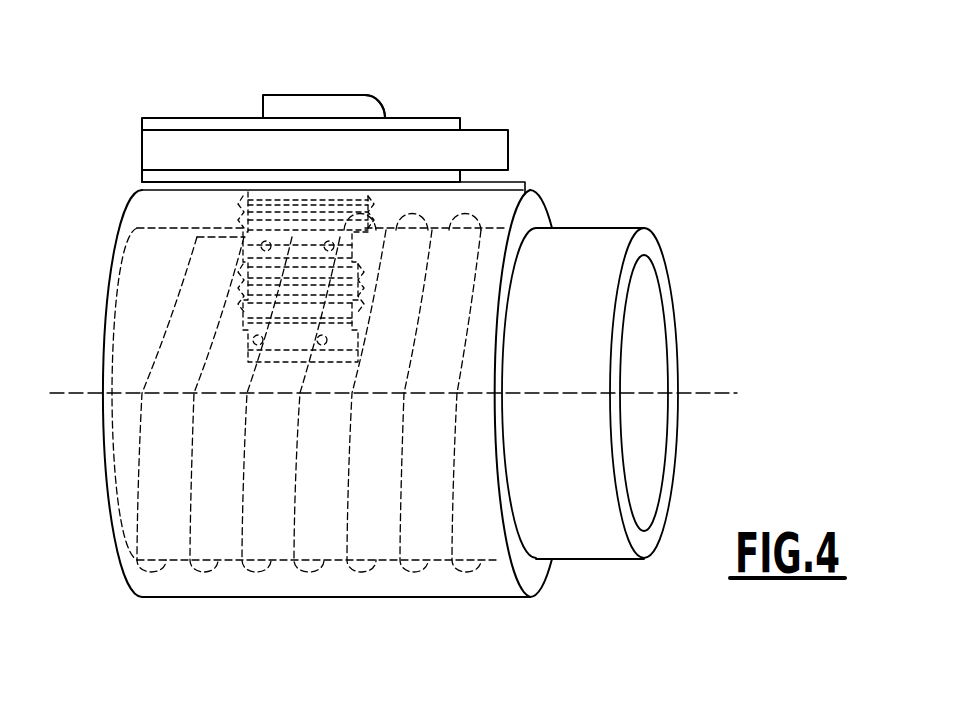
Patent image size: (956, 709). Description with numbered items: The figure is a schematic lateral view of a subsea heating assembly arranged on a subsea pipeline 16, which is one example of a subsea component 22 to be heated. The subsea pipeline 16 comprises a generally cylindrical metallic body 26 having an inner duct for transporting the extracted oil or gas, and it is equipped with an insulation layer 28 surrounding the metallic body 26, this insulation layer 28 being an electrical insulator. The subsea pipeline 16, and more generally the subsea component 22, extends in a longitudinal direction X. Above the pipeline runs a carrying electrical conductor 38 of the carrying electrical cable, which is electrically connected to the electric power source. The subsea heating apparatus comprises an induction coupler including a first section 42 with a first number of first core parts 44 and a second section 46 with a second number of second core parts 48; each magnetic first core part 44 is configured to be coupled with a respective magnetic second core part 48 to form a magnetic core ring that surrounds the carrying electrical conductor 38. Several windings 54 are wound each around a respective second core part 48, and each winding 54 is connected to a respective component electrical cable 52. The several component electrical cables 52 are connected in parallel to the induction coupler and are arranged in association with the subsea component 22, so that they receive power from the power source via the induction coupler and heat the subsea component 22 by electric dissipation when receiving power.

The subsea pipeline 16 is at (705, 278).
The subsea component 22 is at (712, 166).
The metallic body 26 is at (592, 255).
The insulation layer 28 is at (540, 205).
The carrying electrical conductor 38 is at (153, 153).
The first section 42 is at (369, 76).
The first core part 44 is at (277, 105).
The second section 46 is at (266, 383).
The second core part 48 is at (245, 305).
The component electrical cable 52 is at (163, 283).
The winding 54 is at (243, 226).
The longitudinal direction X is at (708, 392).